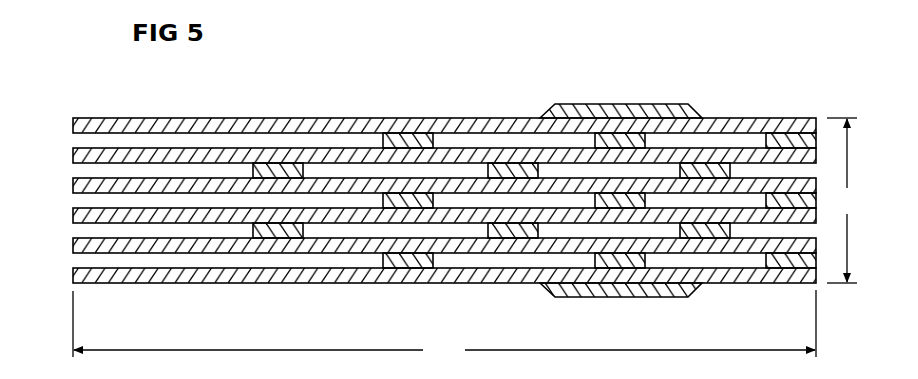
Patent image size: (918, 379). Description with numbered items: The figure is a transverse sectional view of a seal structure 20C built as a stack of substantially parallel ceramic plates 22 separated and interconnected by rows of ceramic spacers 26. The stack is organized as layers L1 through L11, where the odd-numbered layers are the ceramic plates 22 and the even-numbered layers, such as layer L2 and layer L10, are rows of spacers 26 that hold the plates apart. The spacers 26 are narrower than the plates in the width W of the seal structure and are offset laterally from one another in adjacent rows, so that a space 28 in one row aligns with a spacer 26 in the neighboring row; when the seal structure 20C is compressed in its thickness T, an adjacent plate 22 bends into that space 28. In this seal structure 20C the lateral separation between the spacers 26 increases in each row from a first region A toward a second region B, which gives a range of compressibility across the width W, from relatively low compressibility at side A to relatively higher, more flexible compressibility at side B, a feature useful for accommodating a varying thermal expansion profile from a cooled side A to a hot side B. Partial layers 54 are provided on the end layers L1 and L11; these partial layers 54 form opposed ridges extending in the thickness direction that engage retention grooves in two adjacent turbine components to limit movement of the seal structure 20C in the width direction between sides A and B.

The seal structure 20C is at (333, 83).
The ceramic plates 22 is at (417, 186).
The ceramic spacers 26 is at (414, 142).
The space 28 is at (513, 142).
The partial layers 54 is at (580, 104).
The end layer L1 is at (73, 124).
The layer L2 is at (77, 142).
The layer L10 is at (80, 261).
The end layer L11 is at (78, 272).
The first region A is at (800, 94).
The second region B is at (90, 94).
The compressible thickness T is at (842, 200).
The width W is at (444, 326).